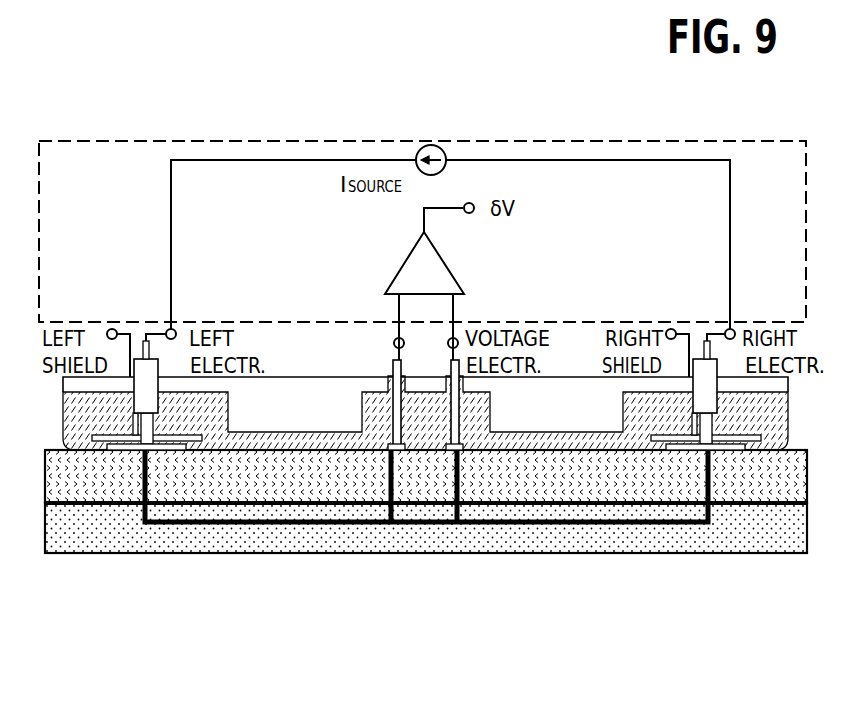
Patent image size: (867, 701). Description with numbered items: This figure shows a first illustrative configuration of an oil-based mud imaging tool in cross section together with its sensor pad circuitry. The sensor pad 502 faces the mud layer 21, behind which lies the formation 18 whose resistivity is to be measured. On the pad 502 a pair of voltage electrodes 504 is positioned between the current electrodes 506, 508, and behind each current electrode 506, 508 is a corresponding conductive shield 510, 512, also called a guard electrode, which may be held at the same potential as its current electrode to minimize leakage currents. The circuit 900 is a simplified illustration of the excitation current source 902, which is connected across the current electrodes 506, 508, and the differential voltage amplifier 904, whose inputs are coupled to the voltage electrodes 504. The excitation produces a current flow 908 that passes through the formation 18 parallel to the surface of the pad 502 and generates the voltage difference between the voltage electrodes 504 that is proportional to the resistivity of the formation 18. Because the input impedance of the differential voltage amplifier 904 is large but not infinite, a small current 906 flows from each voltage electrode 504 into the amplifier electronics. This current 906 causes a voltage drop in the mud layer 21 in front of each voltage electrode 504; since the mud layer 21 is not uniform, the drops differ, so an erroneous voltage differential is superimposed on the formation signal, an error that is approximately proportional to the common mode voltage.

The circuit 900 is at (806, 240).
The excitation current source 902 is at (447, 148).
The differential voltage amplifier 904 is at (403, 265).
The current 906 is at (392, 452).
The current flow 908 is at (308, 522).
The sensor pad 502 is at (62, 395).
The voltage electrodes 504 is at (452, 452).
The current electrode 506 is at (124, 448).
The current electrode 508 is at (723, 447).
The conductive shield 510 is at (92, 448).
The conductive shield 512 is at (755, 442).
The mud layer 21 is at (45, 462).
The formation 18 is at (45, 523).